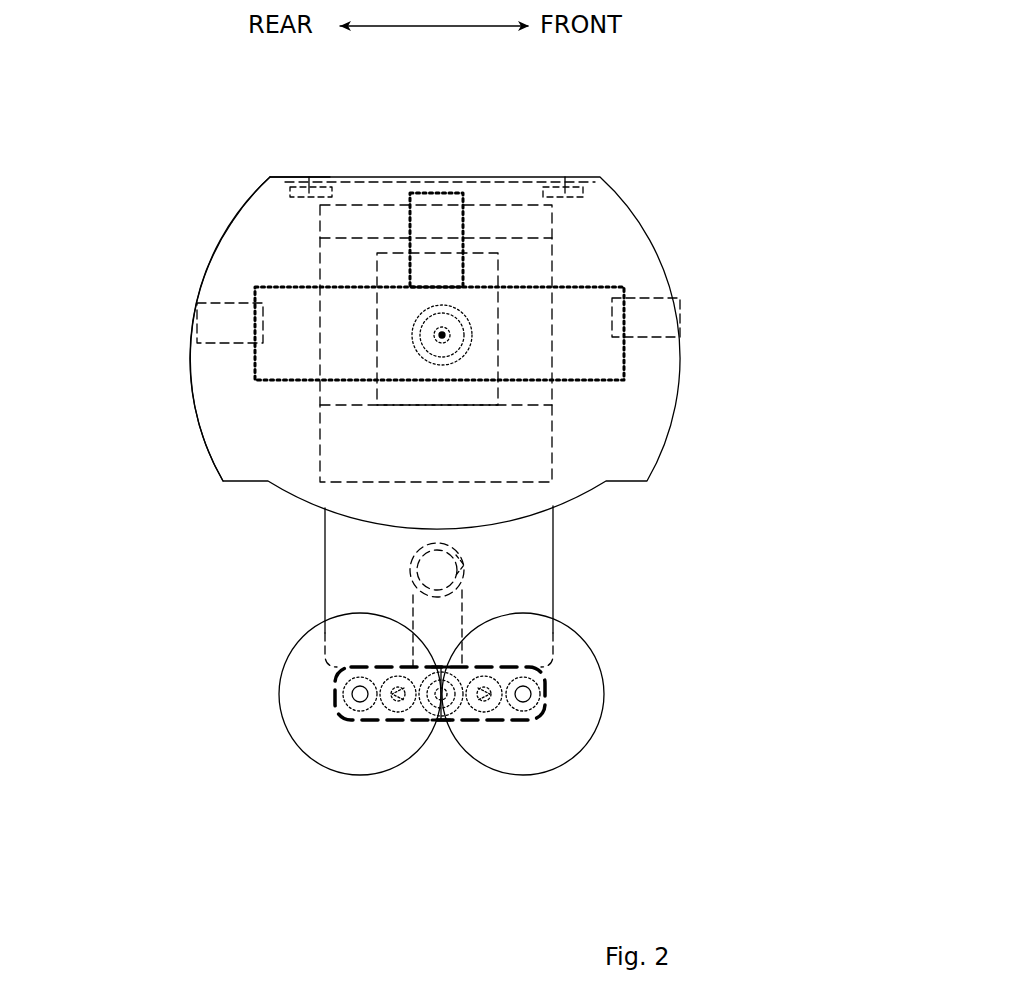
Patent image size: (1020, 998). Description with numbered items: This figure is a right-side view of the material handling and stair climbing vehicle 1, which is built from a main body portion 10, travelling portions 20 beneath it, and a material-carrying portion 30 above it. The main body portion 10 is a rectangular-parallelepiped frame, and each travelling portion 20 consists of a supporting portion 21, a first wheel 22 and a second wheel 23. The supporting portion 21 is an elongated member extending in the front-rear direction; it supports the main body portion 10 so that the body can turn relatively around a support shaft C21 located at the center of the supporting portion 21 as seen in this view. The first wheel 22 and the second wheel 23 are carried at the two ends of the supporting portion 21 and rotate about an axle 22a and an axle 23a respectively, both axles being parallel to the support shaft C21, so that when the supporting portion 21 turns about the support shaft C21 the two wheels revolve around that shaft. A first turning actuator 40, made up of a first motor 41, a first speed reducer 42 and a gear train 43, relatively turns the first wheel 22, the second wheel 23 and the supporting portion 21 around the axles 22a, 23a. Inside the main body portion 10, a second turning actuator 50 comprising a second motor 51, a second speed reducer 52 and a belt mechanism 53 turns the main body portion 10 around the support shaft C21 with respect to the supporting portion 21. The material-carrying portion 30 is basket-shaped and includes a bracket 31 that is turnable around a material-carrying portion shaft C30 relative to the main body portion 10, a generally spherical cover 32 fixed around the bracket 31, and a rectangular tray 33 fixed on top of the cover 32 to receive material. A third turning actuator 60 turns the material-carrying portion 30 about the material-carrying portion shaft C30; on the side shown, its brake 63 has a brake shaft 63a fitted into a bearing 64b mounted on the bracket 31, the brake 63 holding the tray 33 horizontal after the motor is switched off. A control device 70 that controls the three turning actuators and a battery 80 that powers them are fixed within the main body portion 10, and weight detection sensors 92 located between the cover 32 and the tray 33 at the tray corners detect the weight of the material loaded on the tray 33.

The material handling and stair climbing vehicle 1 is at (695, 79).
The main body portion 10 is at (302, 545).
The travelling portion 20 is at (287, 855).
The supporting portion 21 is at (343, 719).
The first wheel 22 is at (469, 754).
The axle 22a is at (516, 704).
The second wheel 23 is at (317, 771).
The axle 23a is at (353, 697).
The support shaft C21 is at (440, 696).
The material-carrying portion 30 is at (203, 101).
The bracket 31 is at (300, 287).
The cover 32 is at (233, 222).
The tray 33 is at (283, 176).
The first turning actuator 40 is at (732, 680).
The first motor 41 is at (440, 693).
The first speed reducer 42 is at (464, 653).
The gear train 43 is at (520, 722).
The second turning actuator 50 is at (655, 525).
The second motor 51 is at (447, 543).
The second speed reducer 52 is at (463, 565).
The belt mechanism 53 is at (472, 597).
The third turning actuator 60 is at (716, 159).
The brake 63 is at (461, 313).
The brake shaft 63a is at (444, 334).
The bearing 64b is at (451, 326).
The material-carrying portion shaft C30 is at (443, 336).
The control device 70 is at (373, 214).
The battery 80 is at (377, 343).
The weight detection sensor 92 is at (309, 186).